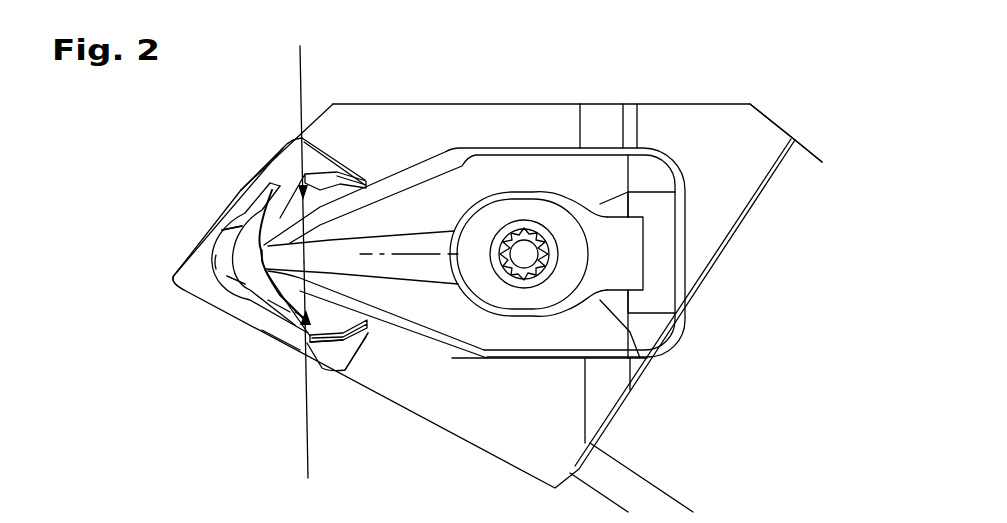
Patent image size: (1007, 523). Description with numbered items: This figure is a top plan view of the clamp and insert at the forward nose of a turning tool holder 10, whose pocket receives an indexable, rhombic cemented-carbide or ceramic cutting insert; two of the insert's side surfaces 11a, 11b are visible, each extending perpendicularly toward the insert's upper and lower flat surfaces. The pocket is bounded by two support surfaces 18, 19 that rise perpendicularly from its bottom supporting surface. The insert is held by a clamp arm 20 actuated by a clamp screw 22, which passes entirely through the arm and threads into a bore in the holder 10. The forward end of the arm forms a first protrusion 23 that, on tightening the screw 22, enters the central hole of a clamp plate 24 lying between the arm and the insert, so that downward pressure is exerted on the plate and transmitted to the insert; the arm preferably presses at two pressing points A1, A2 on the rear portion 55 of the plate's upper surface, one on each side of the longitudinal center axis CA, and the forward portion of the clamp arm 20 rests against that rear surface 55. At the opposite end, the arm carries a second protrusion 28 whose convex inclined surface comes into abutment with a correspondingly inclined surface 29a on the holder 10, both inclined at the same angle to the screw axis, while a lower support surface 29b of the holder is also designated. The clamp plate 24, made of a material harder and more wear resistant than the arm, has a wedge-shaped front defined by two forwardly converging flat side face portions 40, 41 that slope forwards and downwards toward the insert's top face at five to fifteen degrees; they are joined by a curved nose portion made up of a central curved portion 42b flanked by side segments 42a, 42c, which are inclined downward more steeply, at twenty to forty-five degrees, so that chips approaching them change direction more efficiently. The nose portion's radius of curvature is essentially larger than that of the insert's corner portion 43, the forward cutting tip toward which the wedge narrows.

The tool holder 10 is at (552, 104).
The side surface of insert 11a is at (240, 190).
The side surface of insert 11b is at (280, 347).
The support surface 18 is at (334, 159).
The support surface 19 is at (357, 352).
The clamp arm 20 is at (462, 160).
The clamp screw 22 is at (532, 208).
The first protrusion 23 is at (290, 258).
The clamp plate 24 is at (323, 340).
The second protrusion 28 is at (660, 245).
The inclined surface of holder 29a is at (610, 135).
The lower support surface 29b is at (708, 152).
The side face portion 40 is at (278, 316).
The side face portion 41 is at (272, 200).
The side segment of nose portion 42a is at (242, 227).
The central curved portion 42b is at (227, 262).
The side segment of nose portion 42c is at (245, 287).
The corner portion of cutting insert 43 is at (172, 283).
The rear portion of upper surface 55 is at (296, 320).
The longitudinal center axis CA is at (383, 257).
The pressing point A1 is at (304, 134).
The pressing point A2 is at (312, 389).